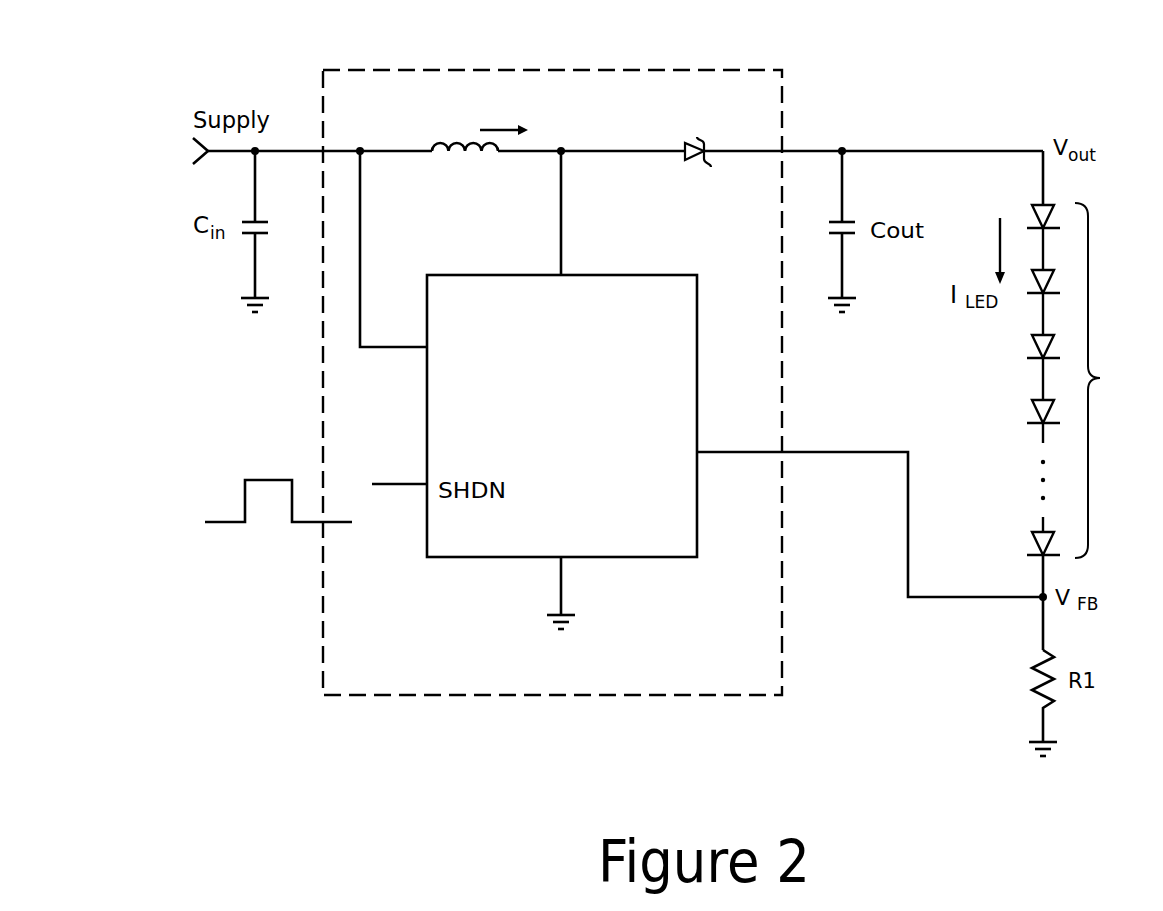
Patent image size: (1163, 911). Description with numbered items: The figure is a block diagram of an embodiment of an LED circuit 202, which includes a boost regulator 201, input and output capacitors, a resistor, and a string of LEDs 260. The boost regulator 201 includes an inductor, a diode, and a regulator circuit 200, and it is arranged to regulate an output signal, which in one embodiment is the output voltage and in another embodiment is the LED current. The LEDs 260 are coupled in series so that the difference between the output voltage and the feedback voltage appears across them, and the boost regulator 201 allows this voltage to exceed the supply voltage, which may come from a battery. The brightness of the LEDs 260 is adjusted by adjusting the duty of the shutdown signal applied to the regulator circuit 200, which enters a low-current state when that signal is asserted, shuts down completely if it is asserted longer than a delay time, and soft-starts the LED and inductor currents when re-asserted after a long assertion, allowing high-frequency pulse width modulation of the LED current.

The regulator circuit 200 is at (582, 370).
The boost regulator 201 is at (642, 108).
The LED circuit 202 is at (697, 25).
The LEDs 260 is at (1090, 380).